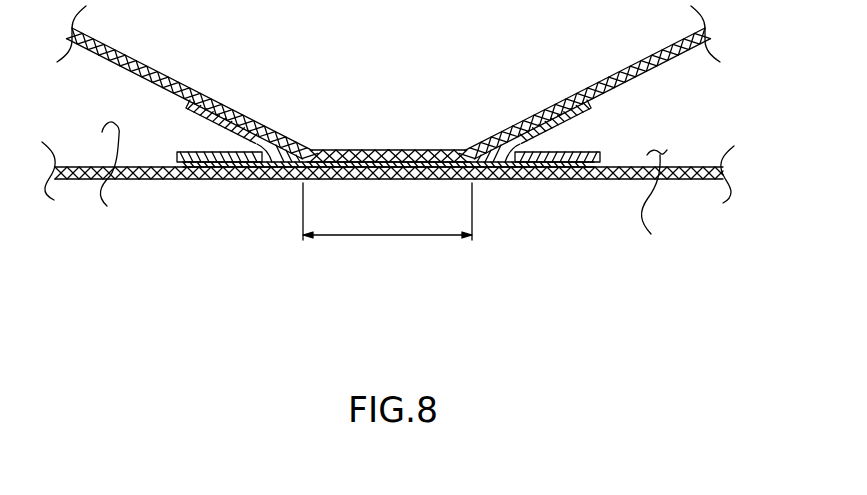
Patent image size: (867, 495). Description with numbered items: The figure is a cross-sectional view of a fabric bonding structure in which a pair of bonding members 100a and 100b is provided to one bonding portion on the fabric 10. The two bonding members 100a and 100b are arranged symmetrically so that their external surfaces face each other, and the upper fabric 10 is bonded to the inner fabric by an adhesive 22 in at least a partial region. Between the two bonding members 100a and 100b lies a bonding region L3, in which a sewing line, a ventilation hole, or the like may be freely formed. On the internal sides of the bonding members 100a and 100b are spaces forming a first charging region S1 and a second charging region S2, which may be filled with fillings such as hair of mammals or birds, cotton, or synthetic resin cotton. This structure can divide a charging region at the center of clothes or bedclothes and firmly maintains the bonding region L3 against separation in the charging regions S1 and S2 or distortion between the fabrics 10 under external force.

The upper fabric 10 is at (697, 180).
The adhesive 22 is at (297, 162).
The bonding member 100a is at (554, 85).
The bonding member 100b is at (204, 152).
The first charging region S1 is at (658, 205).
The second charging region S2 is at (115, 177).
The bonding region L3 is at (387, 223).